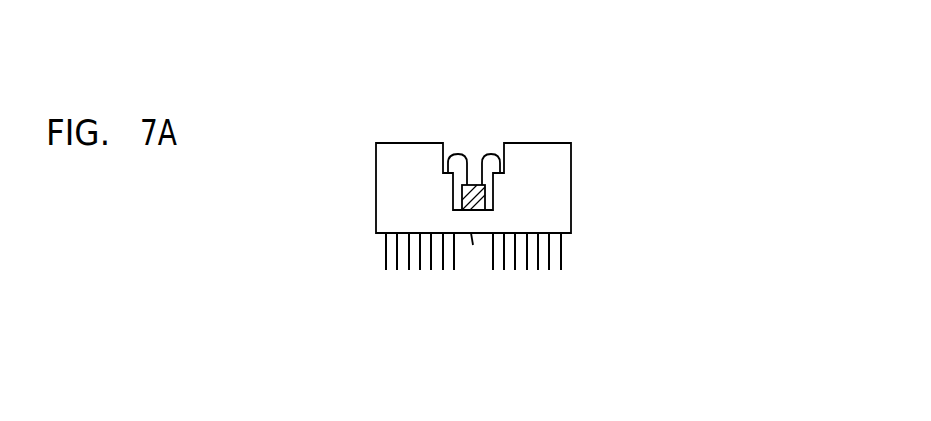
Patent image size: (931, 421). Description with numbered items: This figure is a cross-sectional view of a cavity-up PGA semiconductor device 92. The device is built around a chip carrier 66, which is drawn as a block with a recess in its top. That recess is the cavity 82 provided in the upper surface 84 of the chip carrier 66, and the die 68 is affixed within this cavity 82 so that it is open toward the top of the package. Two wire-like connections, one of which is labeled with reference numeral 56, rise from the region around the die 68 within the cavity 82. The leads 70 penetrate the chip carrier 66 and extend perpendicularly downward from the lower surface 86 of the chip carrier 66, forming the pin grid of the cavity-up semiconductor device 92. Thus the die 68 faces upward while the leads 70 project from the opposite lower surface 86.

The lead wire 56 is at (459, 152).
The chip carrier 66 is at (370, 200).
The die 68 is at (475, 185).
The leads 70 is at (387, 250).
The cavity 82 is at (489, 147).
The upper surface 84 is at (410, 142).
The lower surface 86 is at (473, 245).
The cavity-up PGA semiconductor device 92 is at (547, 133).